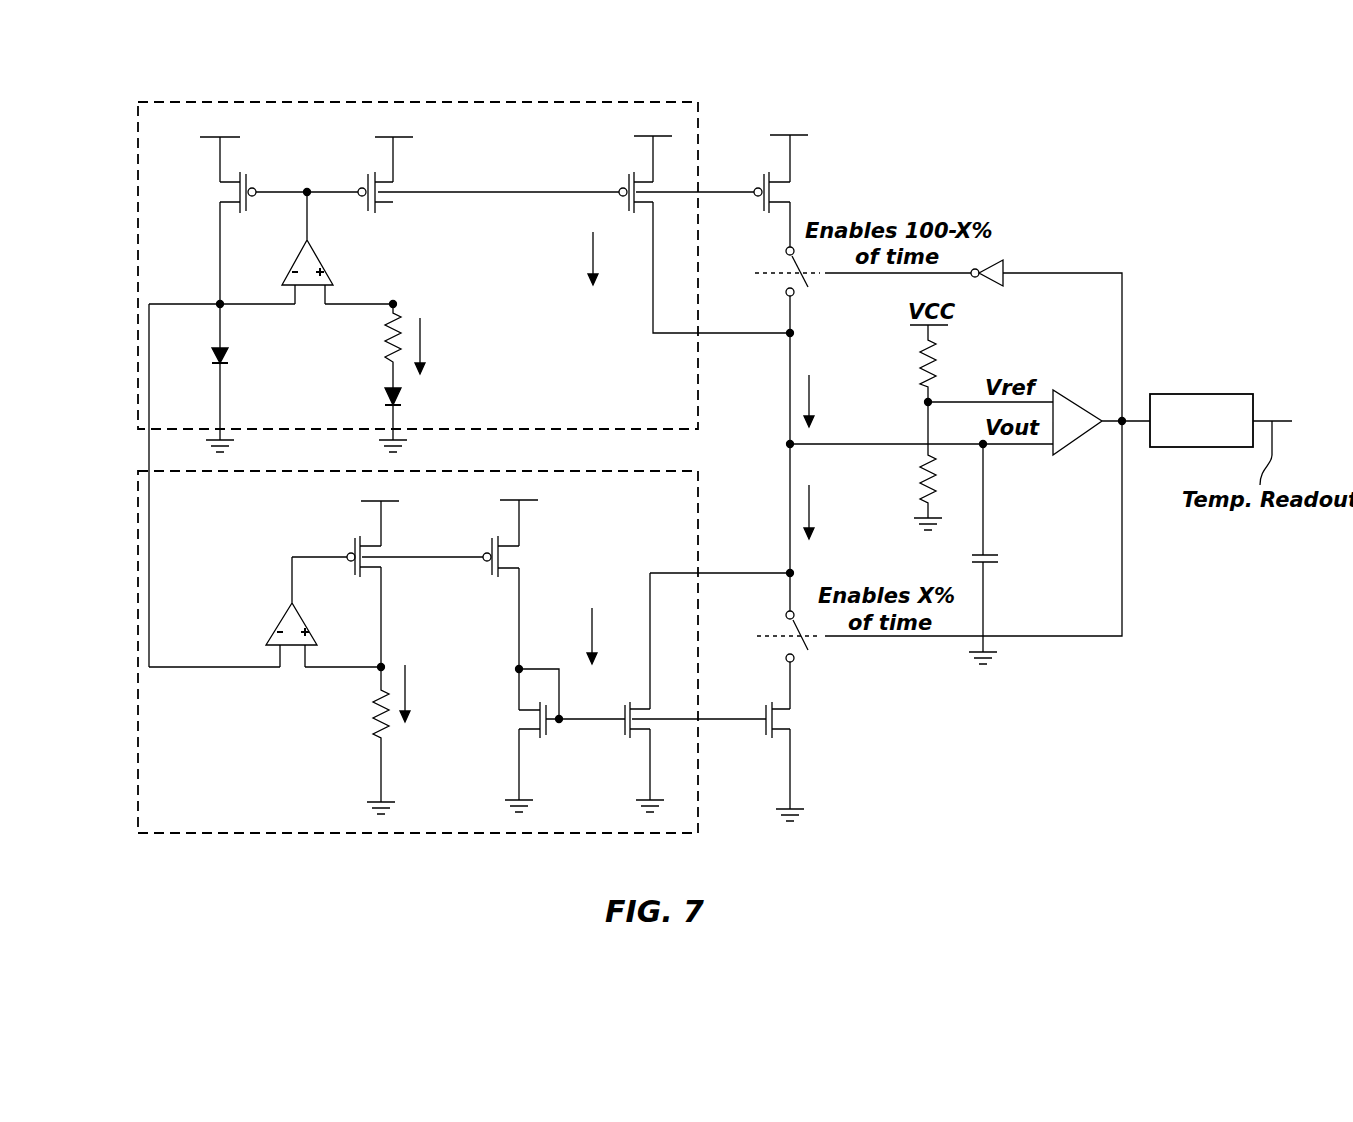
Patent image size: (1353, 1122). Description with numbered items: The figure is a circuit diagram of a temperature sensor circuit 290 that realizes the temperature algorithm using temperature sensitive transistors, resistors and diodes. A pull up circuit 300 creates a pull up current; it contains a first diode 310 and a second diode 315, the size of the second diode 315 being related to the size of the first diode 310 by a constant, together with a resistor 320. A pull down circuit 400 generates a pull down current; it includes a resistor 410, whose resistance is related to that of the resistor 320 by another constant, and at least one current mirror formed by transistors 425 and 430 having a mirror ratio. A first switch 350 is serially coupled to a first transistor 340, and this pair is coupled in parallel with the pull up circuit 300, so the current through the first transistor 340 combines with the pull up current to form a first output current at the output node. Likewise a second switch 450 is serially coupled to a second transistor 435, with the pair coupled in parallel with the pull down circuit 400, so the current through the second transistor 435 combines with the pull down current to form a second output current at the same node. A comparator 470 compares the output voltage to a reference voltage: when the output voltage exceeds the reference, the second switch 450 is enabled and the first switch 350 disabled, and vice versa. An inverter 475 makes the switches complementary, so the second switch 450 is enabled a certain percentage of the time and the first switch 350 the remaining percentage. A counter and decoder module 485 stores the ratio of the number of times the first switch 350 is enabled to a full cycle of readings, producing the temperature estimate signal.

The temperature sensor circuit 290 is at (944, 749).
The pull up circuit 300 is at (138, 208).
The first diode 310 is at (212, 352).
The second diode 315 is at (385, 392).
The resistor 320 is at (385, 342).
The first transistor 340 is at (768, 173).
The first switch 350 is at (792, 264).
The pull down circuit 400 is at (138, 772).
The resistor 410 is at (372, 708).
The transistor 425 is at (545, 740).
The transistor 430 is at (630, 700).
The second transistor 435 is at (772, 740).
The second switch 450 is at (793, 628).
The comparator 470 is at (1070, 420).
The inverter 475 is at (1003, 253).
The counter and decoder module 485 is at (1195, 393).